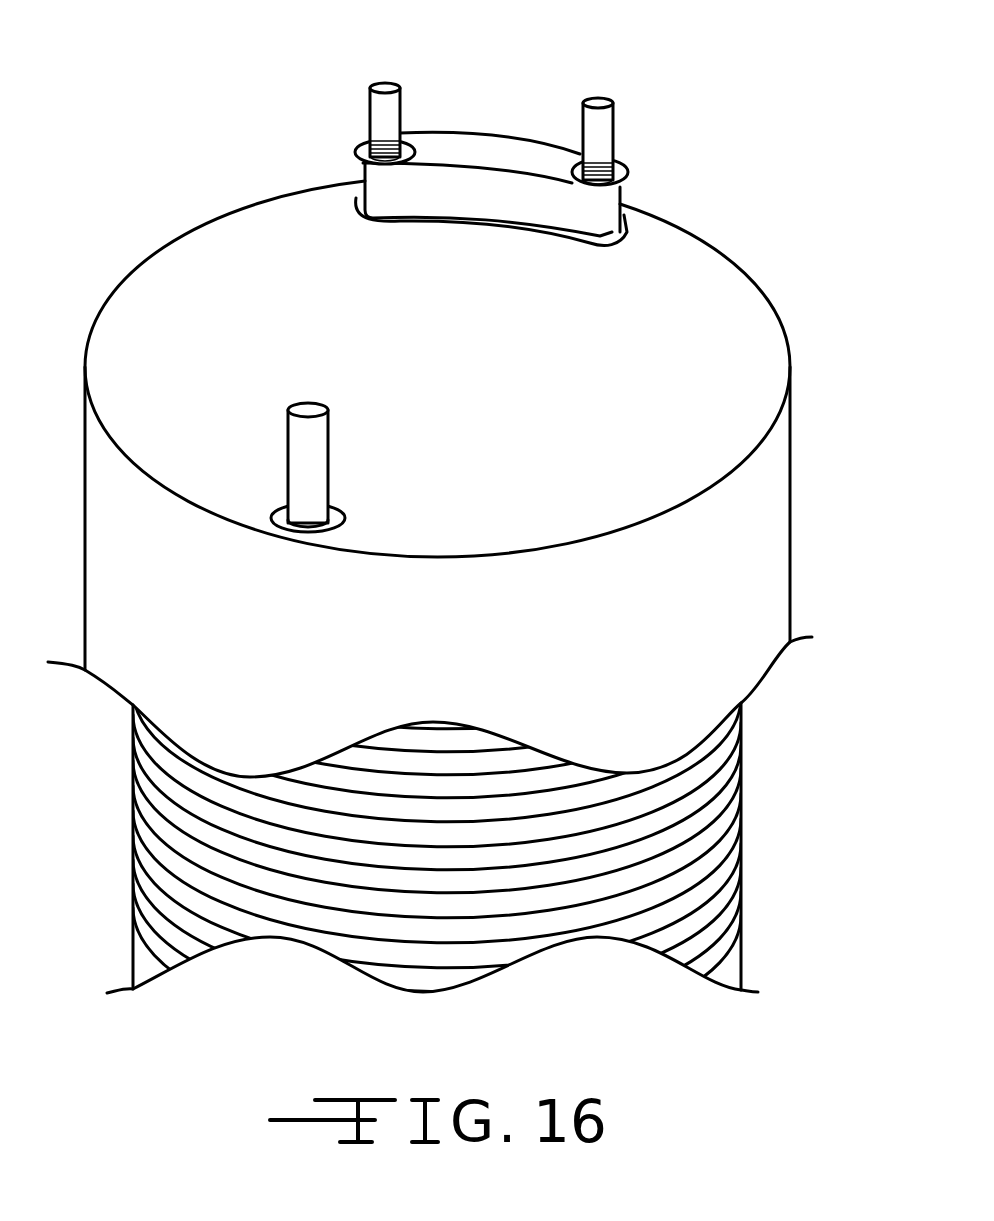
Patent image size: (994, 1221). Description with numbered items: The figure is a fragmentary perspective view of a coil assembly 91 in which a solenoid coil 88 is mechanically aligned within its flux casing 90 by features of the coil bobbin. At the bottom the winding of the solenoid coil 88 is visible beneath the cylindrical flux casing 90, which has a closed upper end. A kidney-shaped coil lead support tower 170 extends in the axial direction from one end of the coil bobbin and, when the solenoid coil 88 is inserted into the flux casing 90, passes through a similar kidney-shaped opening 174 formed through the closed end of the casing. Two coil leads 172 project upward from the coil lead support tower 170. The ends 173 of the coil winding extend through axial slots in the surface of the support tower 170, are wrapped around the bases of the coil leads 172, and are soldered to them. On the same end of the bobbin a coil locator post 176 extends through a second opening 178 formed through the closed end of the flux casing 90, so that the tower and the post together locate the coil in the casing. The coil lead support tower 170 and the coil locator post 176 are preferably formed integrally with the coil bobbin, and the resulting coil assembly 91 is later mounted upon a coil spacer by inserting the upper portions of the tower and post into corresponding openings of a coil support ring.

The solenoid coil 88 is at (697, 868).
The flux casing 90 is at (760, 340).
The coil assembly 91 is at (814, 130).
The coil lead support tower 170 is at (550, 163).
The coil leads 172 is at (372, 101).
The coil winding ends 173 is at (387, 140).
The kidney-shaped opening 174 is at (337, 160).
The coil locator post 176 is at (310, 412).
The second opening 178 is at (353, 498).